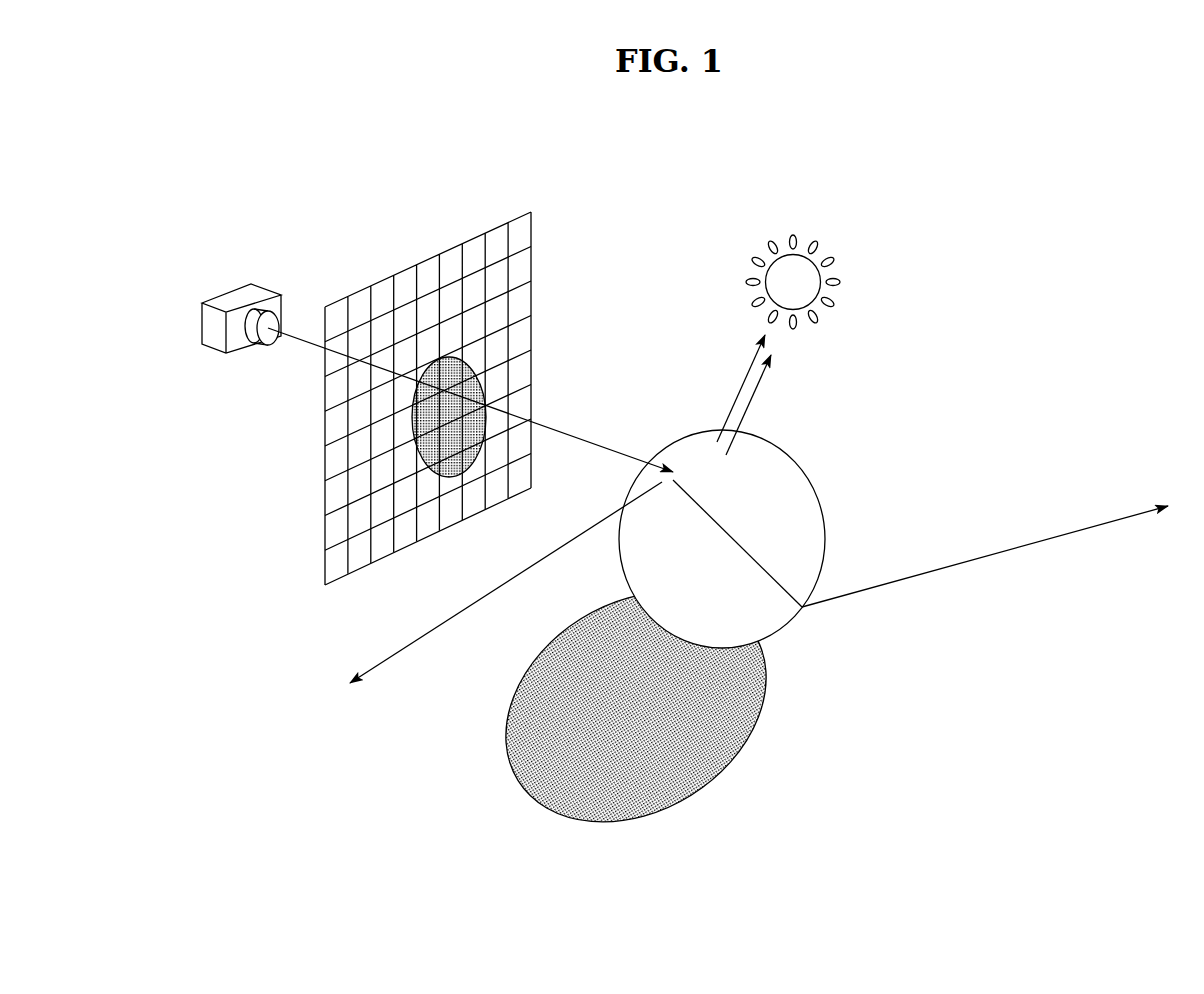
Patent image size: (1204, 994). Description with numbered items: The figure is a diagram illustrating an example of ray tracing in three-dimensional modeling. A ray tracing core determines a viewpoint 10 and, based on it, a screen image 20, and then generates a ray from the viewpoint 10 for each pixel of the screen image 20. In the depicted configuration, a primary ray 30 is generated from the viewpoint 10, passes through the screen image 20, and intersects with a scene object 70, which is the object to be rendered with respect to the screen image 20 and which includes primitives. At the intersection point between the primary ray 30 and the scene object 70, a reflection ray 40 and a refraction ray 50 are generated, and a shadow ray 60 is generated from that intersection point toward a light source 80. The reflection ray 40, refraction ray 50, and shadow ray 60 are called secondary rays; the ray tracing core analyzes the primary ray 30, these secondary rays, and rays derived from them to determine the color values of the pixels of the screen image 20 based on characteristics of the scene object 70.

The viewpoint 10 is at (245, 301).
The screen image 20 is at (428, 388).
The primary ray 30 is at (587, 438).
The reflection ray 40 is at (411, 645).
The refraction ray 50 is at (1013, 550).
The shadow ray 60 is at (742, 390).
The scene object 70 is at (783, 627).
The light source 80 is at (835, 275).